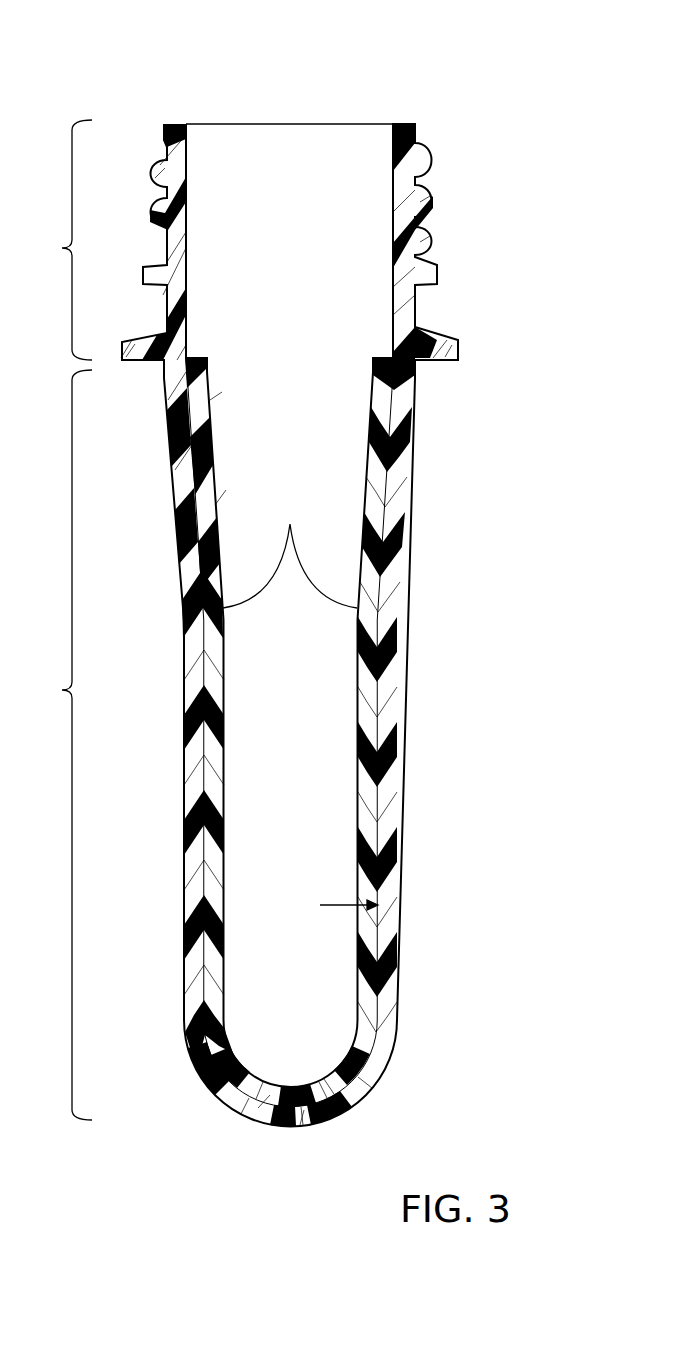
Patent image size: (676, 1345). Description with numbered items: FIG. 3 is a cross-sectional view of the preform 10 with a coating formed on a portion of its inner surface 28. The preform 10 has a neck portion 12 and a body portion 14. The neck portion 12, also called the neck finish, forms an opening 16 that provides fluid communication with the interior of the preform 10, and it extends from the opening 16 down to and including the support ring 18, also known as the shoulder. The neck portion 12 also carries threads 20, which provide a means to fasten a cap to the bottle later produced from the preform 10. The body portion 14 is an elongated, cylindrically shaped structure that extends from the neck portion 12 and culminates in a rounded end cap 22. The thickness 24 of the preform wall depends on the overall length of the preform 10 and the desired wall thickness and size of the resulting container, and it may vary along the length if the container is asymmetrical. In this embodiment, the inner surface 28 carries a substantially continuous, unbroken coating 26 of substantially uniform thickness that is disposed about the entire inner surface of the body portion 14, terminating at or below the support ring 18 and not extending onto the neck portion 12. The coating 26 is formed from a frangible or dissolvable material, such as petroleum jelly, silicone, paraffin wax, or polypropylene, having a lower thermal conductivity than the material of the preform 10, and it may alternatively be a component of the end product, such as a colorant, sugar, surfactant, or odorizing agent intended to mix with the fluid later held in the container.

The preform 10 is at (73, 42).
The neck portion 12 is at (242, 240).
The body portion 14 is at (226, 714).
The opening 16 is at (285, 148).
The support ring 18 is at (458, 351).
The threads 20 is at (430, 162).
The rounded end cap 22 is at (291, 1137).
The thickness of the preform 24 is at (407, 904).
The coating 26 is at (290, 554).
The inner surface 28 is at (366, 728).